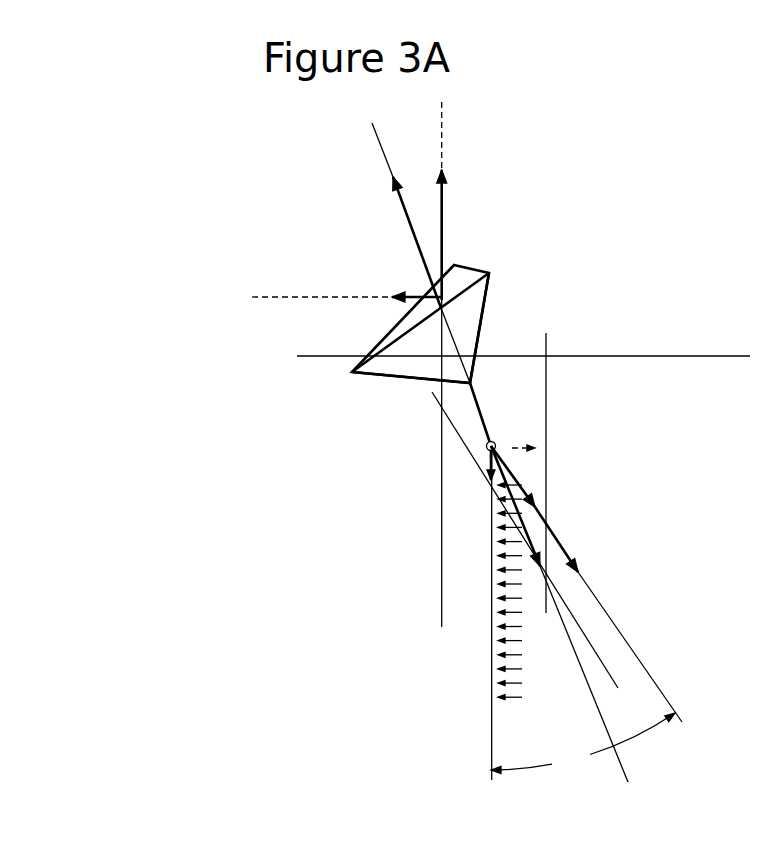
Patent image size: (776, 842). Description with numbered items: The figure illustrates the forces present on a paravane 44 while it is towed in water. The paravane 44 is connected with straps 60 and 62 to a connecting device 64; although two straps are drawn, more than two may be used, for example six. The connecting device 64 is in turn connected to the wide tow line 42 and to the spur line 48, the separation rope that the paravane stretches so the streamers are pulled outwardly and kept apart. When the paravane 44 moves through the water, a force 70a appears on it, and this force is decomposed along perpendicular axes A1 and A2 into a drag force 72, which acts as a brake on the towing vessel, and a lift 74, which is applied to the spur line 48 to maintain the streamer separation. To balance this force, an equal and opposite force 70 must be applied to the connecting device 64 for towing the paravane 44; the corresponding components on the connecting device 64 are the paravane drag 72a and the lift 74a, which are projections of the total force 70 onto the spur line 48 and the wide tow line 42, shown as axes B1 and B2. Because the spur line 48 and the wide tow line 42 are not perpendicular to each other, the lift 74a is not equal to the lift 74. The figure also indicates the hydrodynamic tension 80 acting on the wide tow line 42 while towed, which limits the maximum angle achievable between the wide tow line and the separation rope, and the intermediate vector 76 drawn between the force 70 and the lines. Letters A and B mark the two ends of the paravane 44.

The wide tow line 42 is at (583, 577).
The paravane 44 is at (472, 265).
The spur line 48 is at (492, 645).
The strap 60 is at (403, 382).
The strap 62 is at (483, 322).
The connecting device 64 is at (487, 450).
The force 70 is at (533, 540).
The force 70a is at (405, 213).
The drag force 72 is at (418, 293).
The paravane drag 72a is at (513, 447).
The lift 74 is at (443, 222).
The lift 74a is at (488, 467).
The beam 76 is at (527, 492).
The hydrodynamic tension 80 is at (612, 612).
The prism corner A is at (338, 340).
The prism corner B is at (526, 260).
The axis A1 is at (280, 296).
The axis A2 is at (442, 122).
The axis B1 is at (491, 520).
The axis B2 is at (565, 545).